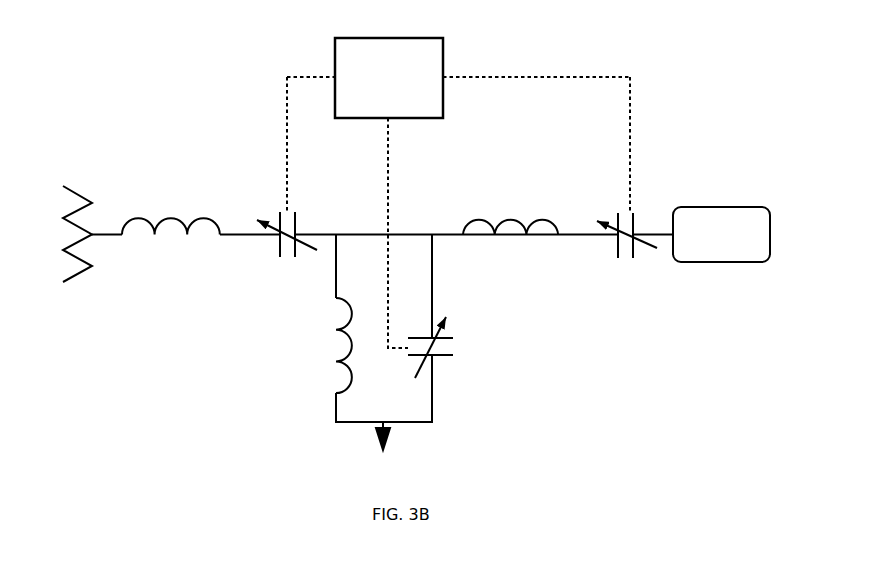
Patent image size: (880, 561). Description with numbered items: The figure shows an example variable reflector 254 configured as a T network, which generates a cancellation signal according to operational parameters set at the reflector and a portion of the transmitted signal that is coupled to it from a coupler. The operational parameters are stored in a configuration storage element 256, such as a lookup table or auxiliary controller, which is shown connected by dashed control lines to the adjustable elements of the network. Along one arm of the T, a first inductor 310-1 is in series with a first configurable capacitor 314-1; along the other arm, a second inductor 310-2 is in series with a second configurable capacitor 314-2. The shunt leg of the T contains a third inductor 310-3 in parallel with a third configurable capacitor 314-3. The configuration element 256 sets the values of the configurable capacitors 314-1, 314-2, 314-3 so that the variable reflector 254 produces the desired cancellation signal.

The variable reflector 254 is at (548, 342).
The configuration storage element 256 is at (338, 38).
The first inductor 310-1 is at (150, 241).
The second inductor 310-2 is at (502, 222).
The third inductor 310-3 is at (336, 362).
The first configurable capacitor 314-1 is at (267, 257).
The second configurable capacitor 314-2 is at (647, 262).
The third configurable capacitor 314-3 is at (452, 362).